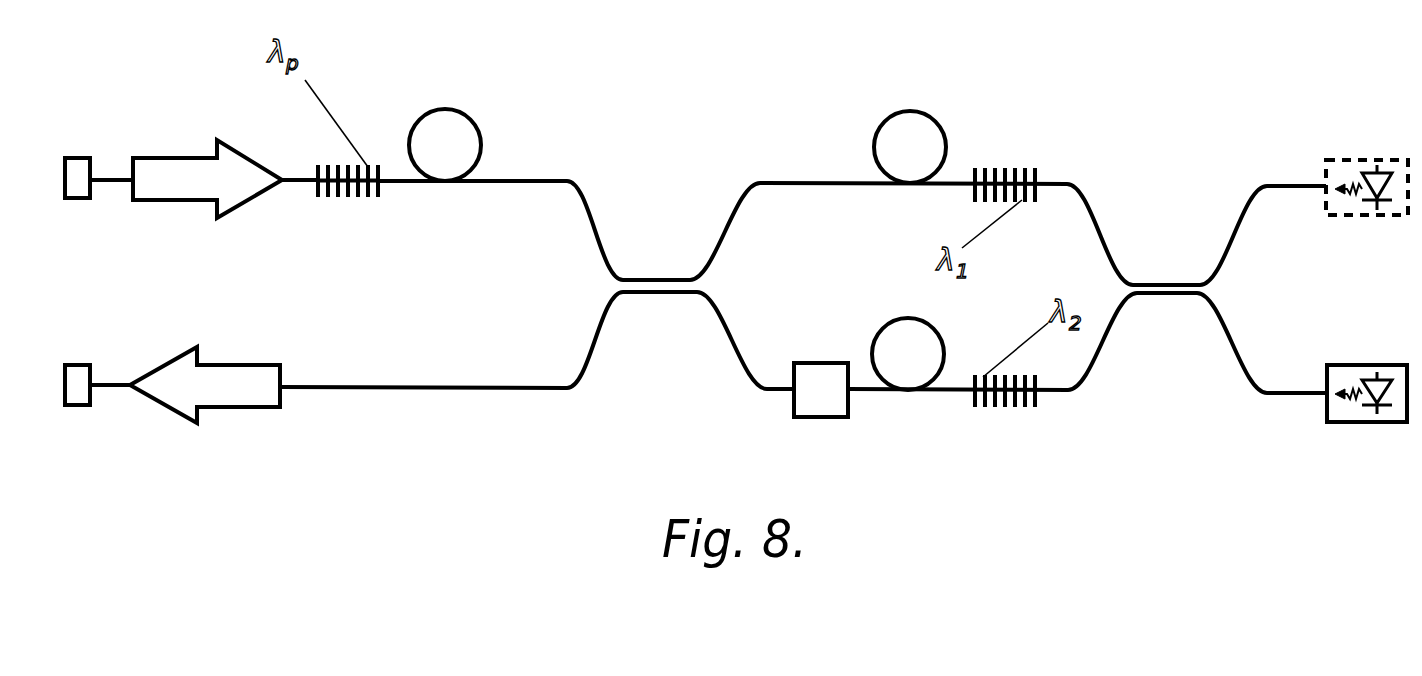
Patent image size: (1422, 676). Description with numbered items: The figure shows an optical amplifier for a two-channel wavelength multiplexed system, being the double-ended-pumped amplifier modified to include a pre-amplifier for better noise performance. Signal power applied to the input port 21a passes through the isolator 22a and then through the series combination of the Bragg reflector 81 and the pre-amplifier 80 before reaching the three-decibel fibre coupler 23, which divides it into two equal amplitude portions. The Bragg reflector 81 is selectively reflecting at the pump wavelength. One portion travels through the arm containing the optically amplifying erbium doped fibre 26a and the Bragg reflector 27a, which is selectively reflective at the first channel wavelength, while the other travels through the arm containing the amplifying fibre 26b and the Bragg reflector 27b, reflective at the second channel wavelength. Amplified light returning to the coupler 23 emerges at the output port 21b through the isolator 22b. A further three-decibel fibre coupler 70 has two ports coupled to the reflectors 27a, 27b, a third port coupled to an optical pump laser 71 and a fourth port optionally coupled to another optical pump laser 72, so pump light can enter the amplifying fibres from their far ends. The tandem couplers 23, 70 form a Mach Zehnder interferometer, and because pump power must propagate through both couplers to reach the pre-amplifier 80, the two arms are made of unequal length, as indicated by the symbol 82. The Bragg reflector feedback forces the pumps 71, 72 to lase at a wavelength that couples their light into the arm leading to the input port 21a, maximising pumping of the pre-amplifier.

The input port 21a is at (82, 165).
The isolator 22a is at (175, 173).
The Bragg reflector 81 is at (358, 197).
The pre-amplifier 80 is at (457, 108).
The 3 dB fibre coupler 23 is at (658, 267).
The unequal arm length symbol 82 is at (798, 400).
The optically amplifying erbium doped fibre 26a is at (885, 118).
The optically amplifying erbium doped fibre 26b is at (887, 322).
The Bragg reflector 27a is at (997, 170).
The Bragg reflector 27b is at (1023, 407).
The 3 dB fibre coupler 70 is at (1167, 257).
The optical pump laser 72 is at (1345, 173).
The optical pump laser 71 is at (1340, 410).
The output port 21b is at (80, 395).
The isolator 22b is at (232, 390).